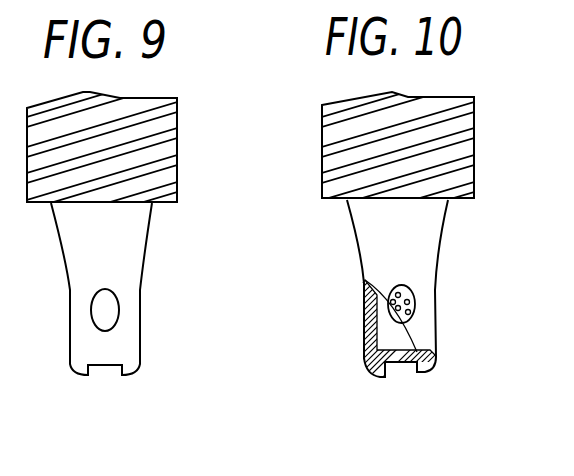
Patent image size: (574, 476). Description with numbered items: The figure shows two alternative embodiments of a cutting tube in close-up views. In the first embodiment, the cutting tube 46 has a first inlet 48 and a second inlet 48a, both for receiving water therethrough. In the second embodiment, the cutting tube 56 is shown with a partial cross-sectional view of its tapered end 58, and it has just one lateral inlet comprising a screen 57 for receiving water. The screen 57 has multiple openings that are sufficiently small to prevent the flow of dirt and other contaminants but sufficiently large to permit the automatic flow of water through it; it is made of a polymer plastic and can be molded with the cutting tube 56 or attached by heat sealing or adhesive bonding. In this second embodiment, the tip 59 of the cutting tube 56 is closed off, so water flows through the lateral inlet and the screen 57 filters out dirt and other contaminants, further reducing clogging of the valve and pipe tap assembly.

In FIG. 9, the cutting tube 46 is at (113, 259).
In FIG. 9, the first inlet 48 is at (106, 368).
In FIG. 9, the second inlet 48a is at (110, 312).
In FIG. 10, the cutting tube 56 is at (410, 258).
In FIG. 10, the screen 57 is at (415, 303).
In FIG. 10, the tapered end 58 is at (363, 322).
In FIG. 10, the tip 59 is at (398, 365).